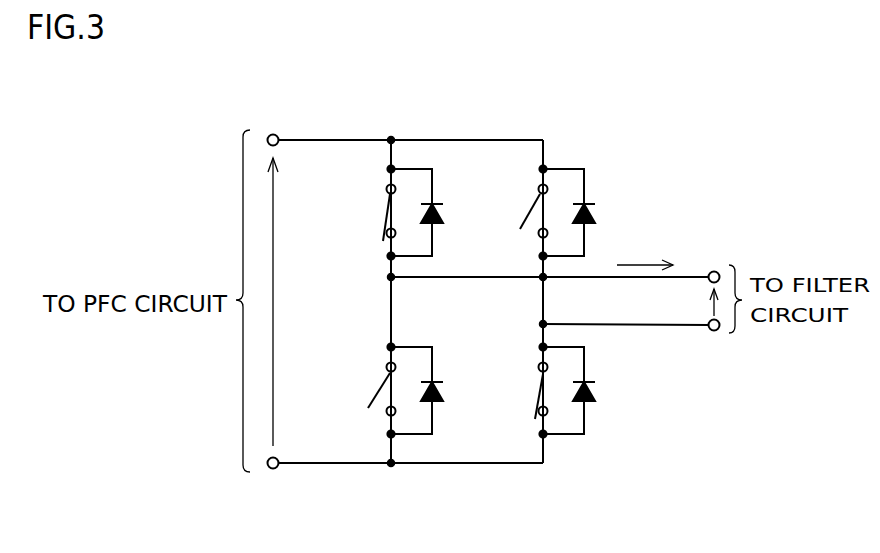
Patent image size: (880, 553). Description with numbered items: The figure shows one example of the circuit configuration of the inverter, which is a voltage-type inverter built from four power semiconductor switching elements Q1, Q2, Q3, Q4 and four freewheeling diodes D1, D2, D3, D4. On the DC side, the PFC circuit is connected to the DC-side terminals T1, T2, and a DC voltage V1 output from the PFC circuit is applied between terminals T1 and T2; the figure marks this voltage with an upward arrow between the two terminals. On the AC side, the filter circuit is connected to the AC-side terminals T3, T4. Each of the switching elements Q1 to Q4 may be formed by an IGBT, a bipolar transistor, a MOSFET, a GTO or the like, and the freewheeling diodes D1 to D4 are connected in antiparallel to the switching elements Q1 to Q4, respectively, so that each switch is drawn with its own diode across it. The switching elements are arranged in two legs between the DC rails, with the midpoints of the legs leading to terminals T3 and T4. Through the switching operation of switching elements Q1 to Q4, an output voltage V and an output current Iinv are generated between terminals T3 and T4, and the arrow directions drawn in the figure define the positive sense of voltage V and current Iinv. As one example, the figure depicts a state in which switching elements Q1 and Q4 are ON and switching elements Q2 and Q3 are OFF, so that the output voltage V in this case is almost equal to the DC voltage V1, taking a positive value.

The DC-side terminal T1 is at (273, 134).
The DC-side terminal T2 is at (273, 469).
The AC-side terminal T3 is at (714, 271).
The AC-side terminal T4 is at (714, 331).
The switching element Q1 is at (385, 207).
The switching element Q2 is at (532, 206).
The switching element Q3 is at (377, 387).
The switching element Q4 is at (537, 381).
The freewheeling diode D1 is at (445, 212).
The freewheeling diode D2 is at (597, 212).
The freewheeling diode D3 is at (445, 391).
The freewheeling diode D4 is at (597, 391).
The DC voltage V1 is at (288, 302).
The output voltage V is at (701, 302).
The output current Iinv is at (645, 255).